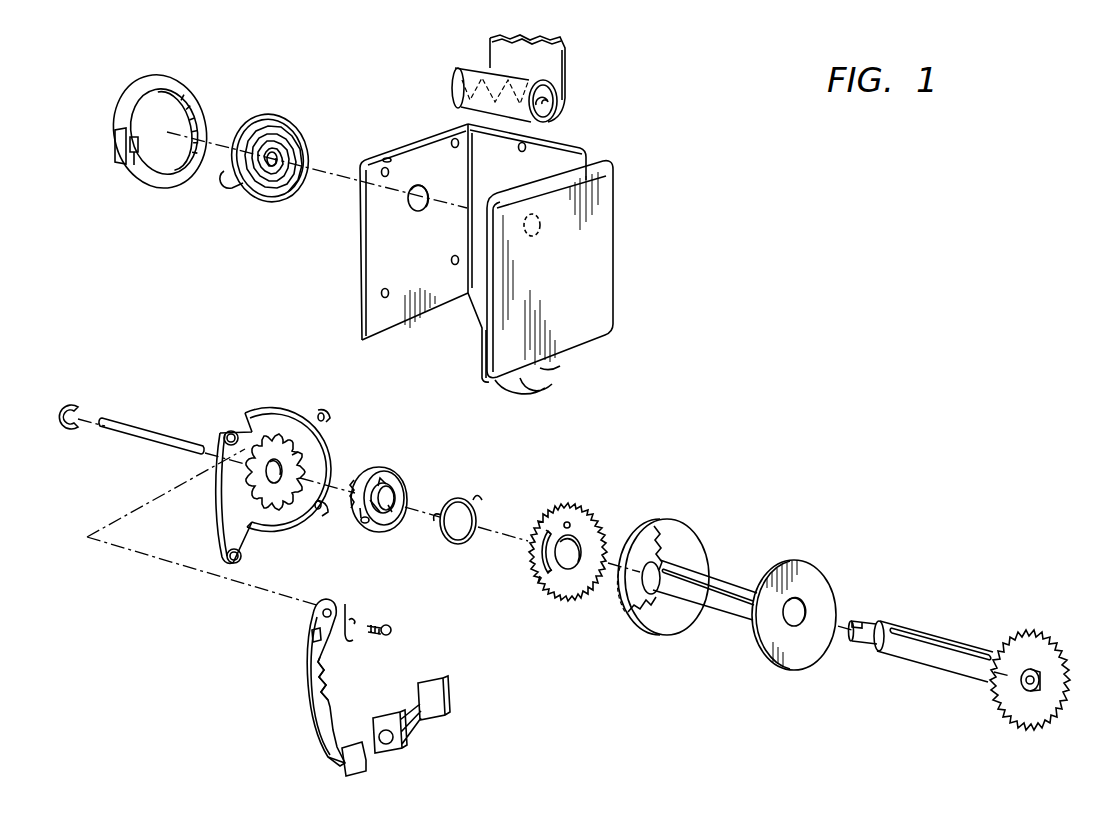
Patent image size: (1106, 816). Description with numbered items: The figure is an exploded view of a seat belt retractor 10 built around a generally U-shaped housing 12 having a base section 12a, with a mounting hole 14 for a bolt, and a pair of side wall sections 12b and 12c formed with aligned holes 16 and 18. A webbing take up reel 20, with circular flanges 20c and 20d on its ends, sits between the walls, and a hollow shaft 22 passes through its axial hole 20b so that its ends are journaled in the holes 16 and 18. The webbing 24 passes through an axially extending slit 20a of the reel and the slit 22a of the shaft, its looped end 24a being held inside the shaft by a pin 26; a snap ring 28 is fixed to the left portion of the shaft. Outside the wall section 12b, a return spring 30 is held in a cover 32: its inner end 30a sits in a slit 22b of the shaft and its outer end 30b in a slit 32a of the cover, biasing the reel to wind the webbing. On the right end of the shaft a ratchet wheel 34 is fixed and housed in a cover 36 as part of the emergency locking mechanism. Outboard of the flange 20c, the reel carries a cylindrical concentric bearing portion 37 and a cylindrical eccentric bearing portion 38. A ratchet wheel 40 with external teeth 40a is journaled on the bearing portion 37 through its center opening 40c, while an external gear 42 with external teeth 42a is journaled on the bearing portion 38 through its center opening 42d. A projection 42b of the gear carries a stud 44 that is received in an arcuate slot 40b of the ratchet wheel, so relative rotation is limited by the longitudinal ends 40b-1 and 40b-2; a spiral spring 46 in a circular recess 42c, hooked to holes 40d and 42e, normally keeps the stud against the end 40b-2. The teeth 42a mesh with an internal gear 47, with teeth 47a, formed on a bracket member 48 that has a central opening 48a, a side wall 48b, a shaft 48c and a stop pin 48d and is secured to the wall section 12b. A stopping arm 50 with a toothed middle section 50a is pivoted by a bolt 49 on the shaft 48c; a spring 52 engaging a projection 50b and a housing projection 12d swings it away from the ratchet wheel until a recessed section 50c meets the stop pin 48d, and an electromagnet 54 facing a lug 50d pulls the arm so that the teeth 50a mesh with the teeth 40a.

The seat belt retractor 10 is at (750, 151).
The housing 12 is at (487, 239).
The base section 12a is at (548, 157).
The side wall section 12b is at (378, 317).
The side wall section 12c is at (485, 342).
The projection 12d is at (387, 158).
The hole 14 is at (525, 380).
The hole 16 is at (418, 212).
The hole 18 is at (538, 232).
The webbing take up reel 20 is at (756, 574).
The slit 20a is at (730, 598).
The axial hole 20b is at (824, 585).
The circular flange 20c is at (705, 562).
The circular flange 20d is at (808, 570).
The hollow shaft 22 is at (921, 643).
The slit 22a is at (966, 663).
The slit 22b is at (860, 622).
The webbing 24 is at (548, 78).
The looped end 24a is at (550, 96).
The pin 26 is at (151, 427).
The snap ring 28 is at (69, 430).
The return spring 30 is at (277, 165).
The inner end 30a is at (276, 164).
The outer end 30b is at (229, 184).
The cover 32 is at (160, 128).
The slit 32a is at (142, 170).
The ratchet wheel 34 is at (1034, 630).
The cover 36 is at (576, 284).
The cylindrical concentric bearing portion 37 is at (681, 548).
The cylindrical eccentric bearing portion 38 is at (652, 532).
The ratchet wheel 40 is at (568, 550).
The external teeth 40a is at (542, 595).
The arcuate slot 40b is at (540, 585).
The longitudinal end 40b-1 is at (552, 522).
The longitudinal end 40b-2 is at (572, 595).
The center opening 40c is at (578, 541).
The hole 40d is at (570, 522).
The external gear 42 is at (409, 485).
The external teeth 42a is at (382, 483).
The projection 42b is at (360, 516).
The circular recess 42c is at (398, 502).
The center opening 42d is at (388, 514).
The hole 42e is at (392, 486).
The stud 44 is at (367, 527).
The spiral spring 46 is at (462, 546).
The internal gear 47 is at (252, 481).
The gear teeth 47a is at (302, 462).
The bracket member 48 is at (283, 462).
The central opening 48a is at (270, 455).
The side wall 48b is at (325, 440).
The shaft 48c is at (233, 430).
The stop pin 48d is at (241, 556).
The bolt 49 is at (392, 631).
The stopping arm 50 is at (346, 691).
The toothed middle section 50a is at (330, 674).
The projection 50b is at (312, 637).
The recessed section 50c is at (326, 756).
The lug 50d is at (367, 762).
The spring 52 is at (352, 615).
The electromagnet 54 is at (422, 716).